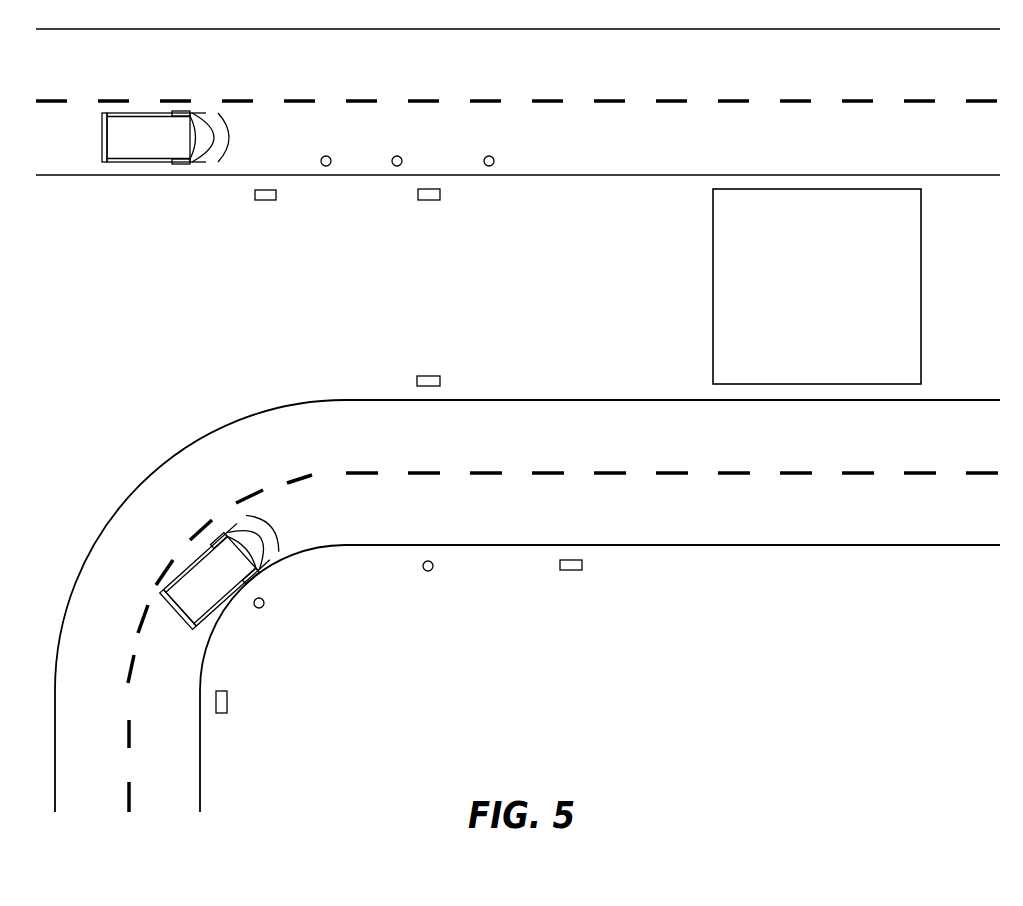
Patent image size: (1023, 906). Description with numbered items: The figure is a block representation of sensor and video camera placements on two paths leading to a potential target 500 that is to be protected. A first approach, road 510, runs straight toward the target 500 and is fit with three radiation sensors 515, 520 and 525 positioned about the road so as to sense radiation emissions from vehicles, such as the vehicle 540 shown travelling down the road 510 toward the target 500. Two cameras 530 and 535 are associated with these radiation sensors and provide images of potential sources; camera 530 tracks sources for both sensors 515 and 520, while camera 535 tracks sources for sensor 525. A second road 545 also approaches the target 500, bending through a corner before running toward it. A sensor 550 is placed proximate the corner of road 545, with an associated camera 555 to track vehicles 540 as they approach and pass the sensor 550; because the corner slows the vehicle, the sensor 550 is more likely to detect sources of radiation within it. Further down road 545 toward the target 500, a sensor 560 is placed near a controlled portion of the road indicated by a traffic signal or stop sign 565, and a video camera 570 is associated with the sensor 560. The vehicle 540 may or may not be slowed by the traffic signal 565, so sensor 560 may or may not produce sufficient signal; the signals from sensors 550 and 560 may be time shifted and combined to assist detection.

The target 500 is at (921, 288).
The road 510 is at (518, 28).
The radiation sensor 515 is at (330, 157).
The radiation sensor 520 is at (401, 157).
The radiation sensor 525 is at (493, 157).
The camera 530 is at (265, 200).
The camera 535 is at (429, 200).
The vehicle 540 is at (149, 112).
The second road 545 is at (553, 400).
The sensor 550 is at (263, 607).
The camera 555 is at (227, 700).
The sensor 560 is at (431, 570).
The traffic signal or stop sign 565 is at (430, 376).
The video camera 570 is at (571, 570).